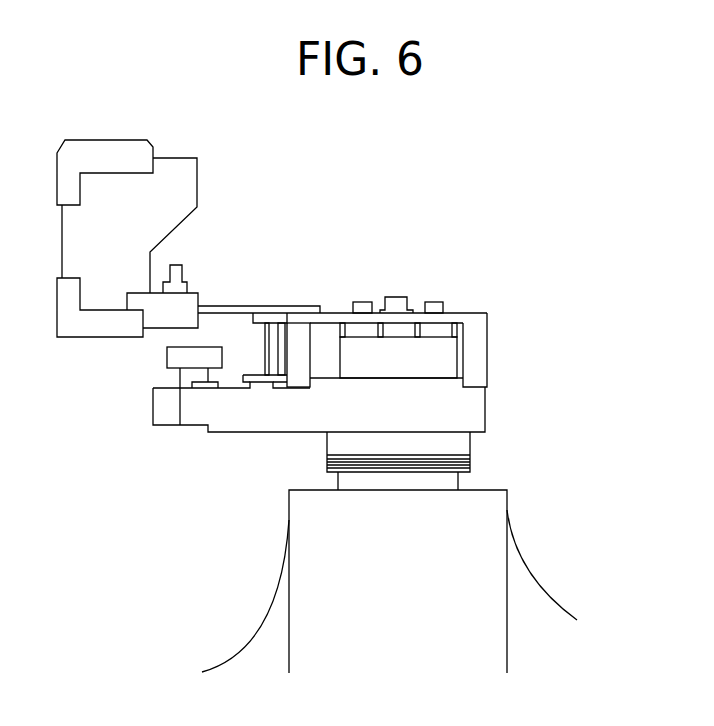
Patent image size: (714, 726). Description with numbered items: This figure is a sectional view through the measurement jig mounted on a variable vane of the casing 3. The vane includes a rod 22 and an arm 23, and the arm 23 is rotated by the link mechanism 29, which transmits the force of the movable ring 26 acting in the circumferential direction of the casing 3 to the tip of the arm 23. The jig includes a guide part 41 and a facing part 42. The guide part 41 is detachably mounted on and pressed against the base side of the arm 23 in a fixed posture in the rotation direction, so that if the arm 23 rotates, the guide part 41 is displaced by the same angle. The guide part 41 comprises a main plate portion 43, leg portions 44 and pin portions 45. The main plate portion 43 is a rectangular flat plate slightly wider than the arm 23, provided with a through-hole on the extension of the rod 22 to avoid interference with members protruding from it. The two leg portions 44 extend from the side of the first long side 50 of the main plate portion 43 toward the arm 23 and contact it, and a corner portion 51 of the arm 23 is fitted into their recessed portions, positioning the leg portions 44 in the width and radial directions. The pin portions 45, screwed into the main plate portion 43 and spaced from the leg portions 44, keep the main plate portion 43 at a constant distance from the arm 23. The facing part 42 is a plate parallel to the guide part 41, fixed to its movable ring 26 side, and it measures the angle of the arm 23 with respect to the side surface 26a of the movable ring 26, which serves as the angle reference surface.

The casing 3 is at (527, 568).
The rod 22 is at (448, 445).
The arm 23 is at (470, 405).
The movable ring 26 is at (178, 173).
The side surface 26a is at (198, 297).
The link mechanism 29 is at (165, 353).
The guide part 41 is at (338, 313).
The facing part 42 is at (241, 305).
The main plate portion 43 is at (457, 318).
The leg portion 44 is at (477, 338).
The pin portion 45 is at (270, 345).
The first long side 50 is at (403, 263).
The corner portion 51 is at (400, 378).